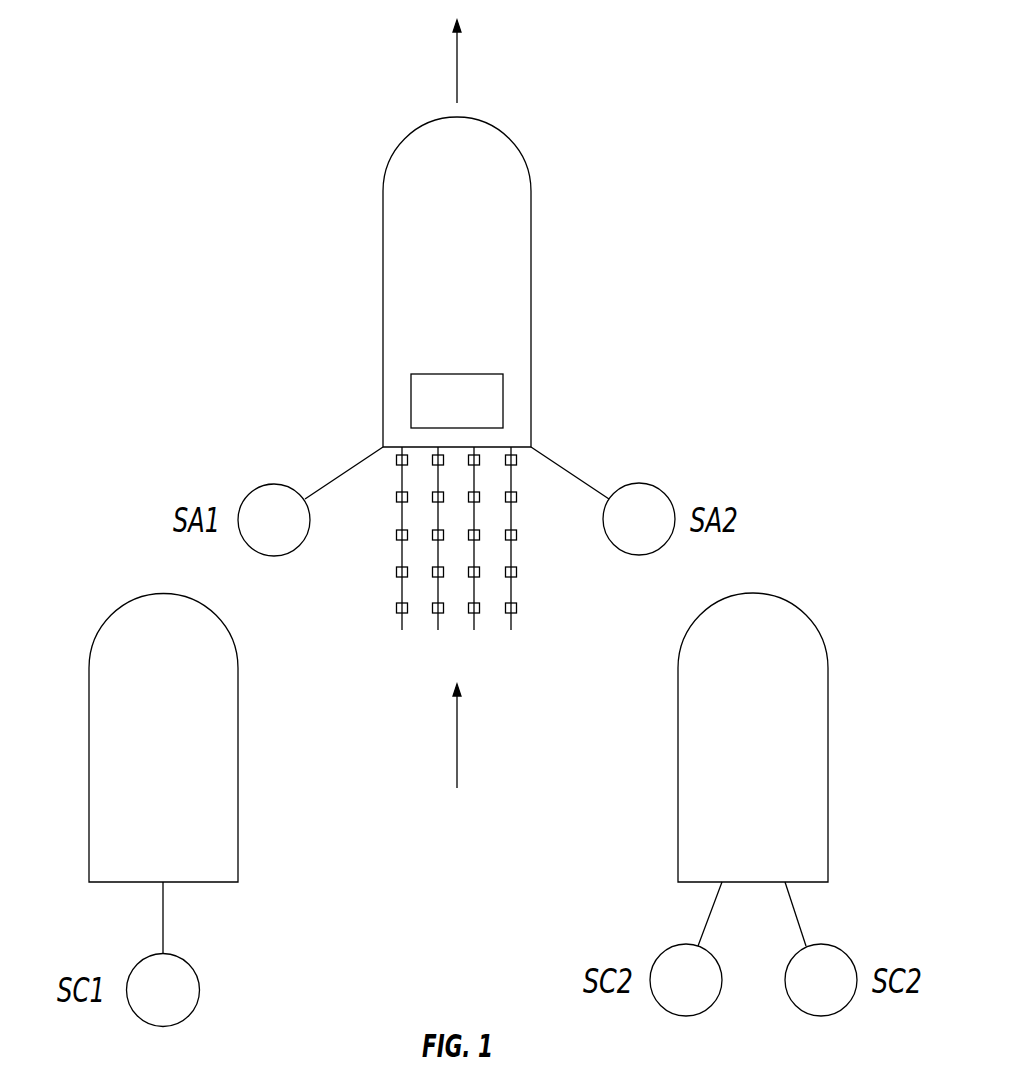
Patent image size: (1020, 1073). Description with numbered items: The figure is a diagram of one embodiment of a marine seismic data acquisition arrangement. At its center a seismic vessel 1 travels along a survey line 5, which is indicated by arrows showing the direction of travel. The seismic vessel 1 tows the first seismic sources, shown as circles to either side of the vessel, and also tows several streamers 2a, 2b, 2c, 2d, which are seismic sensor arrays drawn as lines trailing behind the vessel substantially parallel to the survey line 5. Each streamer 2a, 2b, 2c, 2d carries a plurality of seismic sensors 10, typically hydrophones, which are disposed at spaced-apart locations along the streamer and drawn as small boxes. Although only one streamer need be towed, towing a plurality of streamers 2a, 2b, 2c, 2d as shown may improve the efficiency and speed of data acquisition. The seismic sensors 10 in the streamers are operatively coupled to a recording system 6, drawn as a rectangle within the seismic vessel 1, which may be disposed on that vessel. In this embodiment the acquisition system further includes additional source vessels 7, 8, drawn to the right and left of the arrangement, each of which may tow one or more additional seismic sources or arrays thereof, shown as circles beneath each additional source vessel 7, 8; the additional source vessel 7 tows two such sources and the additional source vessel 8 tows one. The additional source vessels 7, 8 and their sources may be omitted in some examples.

The seismic vessel 1 is at (531, 263).
The streamer 2a is at (402, 481).
The streamer 2b is at (438, 547).
The streamer 2c is at (474, 475).
The streamer 2d is at (511, 596).
The survey line 5 is at (457, 68).
The recording system 6 is at (503, 401).
The additional source vessel 7 is at (828, 695).
The additional source vessel 8 is at (89, 695).
The seismic sensors 10 is at (402, 607).